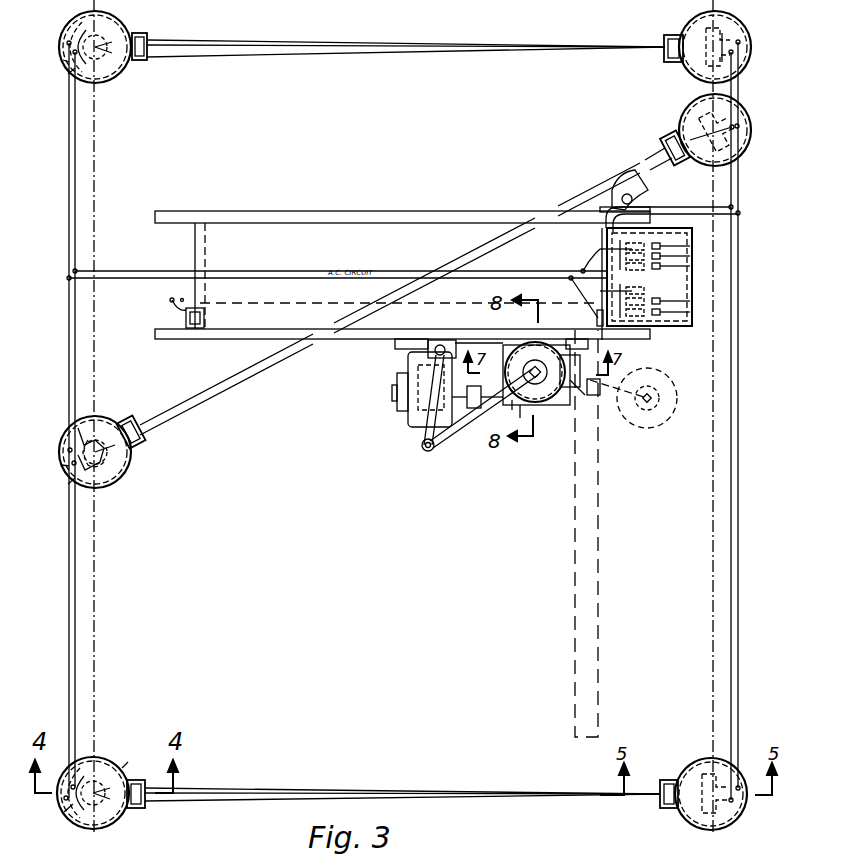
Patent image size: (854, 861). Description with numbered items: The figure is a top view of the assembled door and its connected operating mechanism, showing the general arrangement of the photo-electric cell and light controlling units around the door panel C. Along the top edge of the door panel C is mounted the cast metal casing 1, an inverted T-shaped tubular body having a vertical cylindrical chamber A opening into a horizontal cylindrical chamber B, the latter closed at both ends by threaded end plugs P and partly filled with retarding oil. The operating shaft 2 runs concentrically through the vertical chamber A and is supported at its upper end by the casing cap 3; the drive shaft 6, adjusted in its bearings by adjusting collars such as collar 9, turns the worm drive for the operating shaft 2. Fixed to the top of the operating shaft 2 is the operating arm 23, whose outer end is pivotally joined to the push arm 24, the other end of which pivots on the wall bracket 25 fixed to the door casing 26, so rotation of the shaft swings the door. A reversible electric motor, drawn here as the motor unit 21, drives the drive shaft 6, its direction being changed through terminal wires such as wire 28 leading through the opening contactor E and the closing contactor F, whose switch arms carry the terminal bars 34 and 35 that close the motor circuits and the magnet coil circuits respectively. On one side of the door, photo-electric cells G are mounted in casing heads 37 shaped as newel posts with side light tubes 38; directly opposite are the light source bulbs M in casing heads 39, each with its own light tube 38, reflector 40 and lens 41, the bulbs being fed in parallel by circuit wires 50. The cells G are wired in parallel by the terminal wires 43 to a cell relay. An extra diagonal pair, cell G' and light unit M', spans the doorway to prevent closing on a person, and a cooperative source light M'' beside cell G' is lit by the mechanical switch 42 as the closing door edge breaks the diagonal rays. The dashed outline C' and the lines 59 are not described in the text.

The light source bulb M is at (84, 420).
The light source unit M' is at (83, 452).
The cooperative source light M'' is at (404, 299).
The photo-electric cell G is at (725, 420).
The photo-electric cell unit G' is at (729, 130).
The casing head 37 is at (750, 60).
The side light tube 38 is at (142, 58).
The casing head 39 is at (63, 60).
The reflector 40 is at (68, 74).
The lens 41 is at (146, 40).
The mechanical switch 42 is at (596, 322).
The terminal wires 43 is at (728, 622).
The motor lead wires 59 is at (68, 660).
The circuit wires 50 is at (178, 318).
The terminal wire 28 is at (150, 302).
The door casing 26 is at (650, 338).
The terminal bar 34 is at (666, 279).
The terminal bar 35 is at (682, 280).
The closing contactor instrument F is at (598, 249).
The opening contactor instrument E is at (598, 291).
The door panel C is at (593, 533).
The control line C' is at (400, 295).
The casing 1 is at (518, 420).
The operating shaft 2 is at (537, 385).
The casing cap 3 is at (580, 360).
The drive shaft 6 is at (478, 390).
The adjusting collar 9 is at (507, 411).
The vertical cylindrical chamber A is at (581, 394).
The horizontal cylindrical chamber B is at (550, 400).
The end plug P is at (632, 398).
The control motor 21 is at (408, 420).
The operating arm 23 is at (445, 437).
The push arm 24 is at (422, 442).
The wall bracket 25 is at (428, 352).